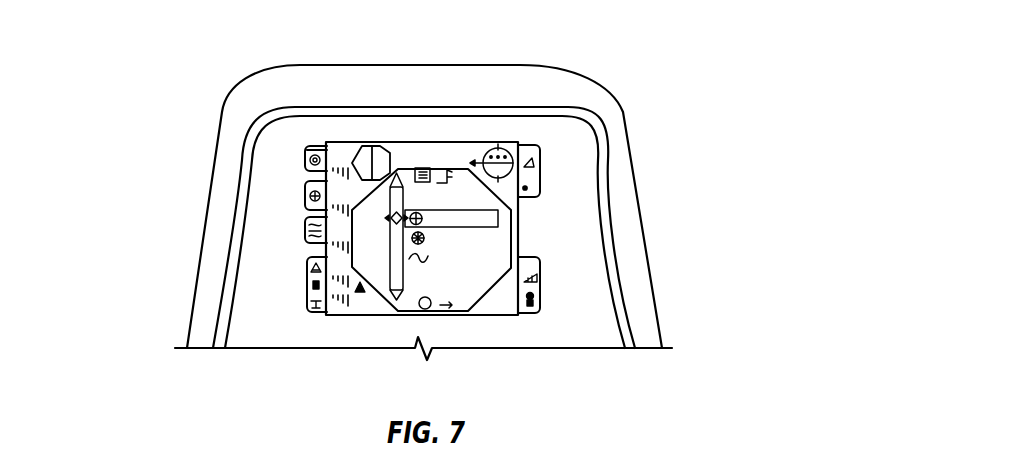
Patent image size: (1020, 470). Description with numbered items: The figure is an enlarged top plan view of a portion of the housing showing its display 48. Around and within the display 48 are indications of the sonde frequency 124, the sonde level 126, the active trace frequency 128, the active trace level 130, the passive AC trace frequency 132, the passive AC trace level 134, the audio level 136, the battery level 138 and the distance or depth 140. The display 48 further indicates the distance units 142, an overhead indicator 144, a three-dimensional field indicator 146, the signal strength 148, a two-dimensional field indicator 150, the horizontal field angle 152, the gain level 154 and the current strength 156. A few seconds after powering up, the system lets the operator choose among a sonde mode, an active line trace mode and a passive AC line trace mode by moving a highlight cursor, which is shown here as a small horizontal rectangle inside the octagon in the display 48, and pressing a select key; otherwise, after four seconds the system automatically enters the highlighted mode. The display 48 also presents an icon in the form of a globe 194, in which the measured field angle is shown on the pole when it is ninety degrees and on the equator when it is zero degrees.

The display 48 is at (498, 332).
The sonde frequency 124 is at (308, 146).
The sonde level 126 is at (308, 165).
The active trace frequency 128 is at (308, 182).
The active trace level 130 is at (308, 202).
The passive (AC) trace frequency 132 is at (308, 218).
The passive (AC) trace level 134 is at (308, 240).
The audio level 136 is at (308, 270).
The battery level 138 is at (308, 288).
The distance (depth) 140 is at (308, 307).
The distance units 142 is at (360, 316).
The overhead indicator 144 is at (365, 291).
The 3D field indicator 146 is at (376, 146).
The signal strength 148 is at (454, 142).
The 2D field indicator 150 is at (536, 161).
The horizontal field angle 152 is at (527, 188).
The gain level 154 is at (540, 278).
The current strength 156 is at (540, 302).
The globe 194 is at (512, 146).